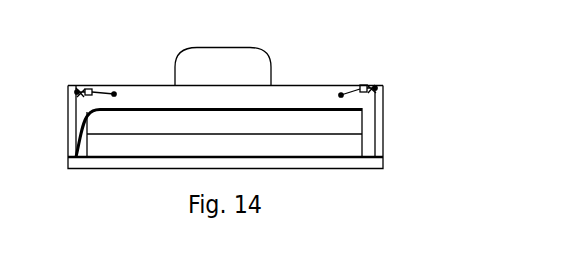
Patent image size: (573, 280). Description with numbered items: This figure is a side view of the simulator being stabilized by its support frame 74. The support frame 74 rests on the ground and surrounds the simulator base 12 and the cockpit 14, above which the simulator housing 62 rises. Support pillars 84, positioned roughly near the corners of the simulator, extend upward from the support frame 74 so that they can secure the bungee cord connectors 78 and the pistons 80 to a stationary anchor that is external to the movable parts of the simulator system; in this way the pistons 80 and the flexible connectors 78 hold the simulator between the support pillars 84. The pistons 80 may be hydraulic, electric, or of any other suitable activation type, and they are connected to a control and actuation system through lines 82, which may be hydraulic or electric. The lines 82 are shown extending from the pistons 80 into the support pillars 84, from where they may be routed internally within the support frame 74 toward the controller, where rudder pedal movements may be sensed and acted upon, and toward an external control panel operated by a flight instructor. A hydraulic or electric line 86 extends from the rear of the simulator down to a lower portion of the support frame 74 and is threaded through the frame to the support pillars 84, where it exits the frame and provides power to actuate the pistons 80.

The vehicle body 12 is at (262, 142).
The roof panel 14 is at (283, 84).
The cargo carrier housing 62 is at (229, 41).
The support frame 74 is at (390, 168).
The bungee cord connectors 78 is at (78, 90).
The pistons 80 is at (92, 89).
The lines 82 is at (75, 91).
The support pillars 84 is at (66, 108).
The hydraulic or electric line 86 is at (82, 137).